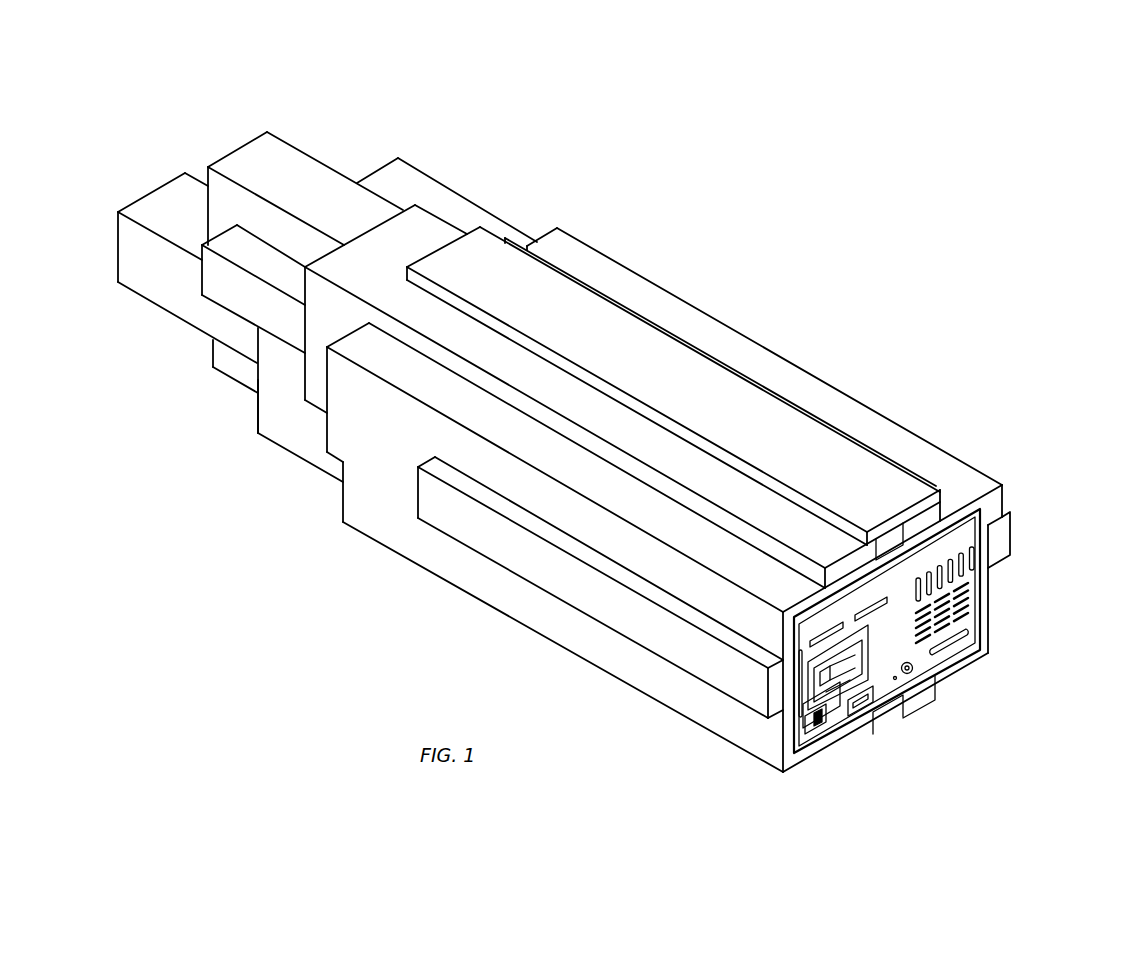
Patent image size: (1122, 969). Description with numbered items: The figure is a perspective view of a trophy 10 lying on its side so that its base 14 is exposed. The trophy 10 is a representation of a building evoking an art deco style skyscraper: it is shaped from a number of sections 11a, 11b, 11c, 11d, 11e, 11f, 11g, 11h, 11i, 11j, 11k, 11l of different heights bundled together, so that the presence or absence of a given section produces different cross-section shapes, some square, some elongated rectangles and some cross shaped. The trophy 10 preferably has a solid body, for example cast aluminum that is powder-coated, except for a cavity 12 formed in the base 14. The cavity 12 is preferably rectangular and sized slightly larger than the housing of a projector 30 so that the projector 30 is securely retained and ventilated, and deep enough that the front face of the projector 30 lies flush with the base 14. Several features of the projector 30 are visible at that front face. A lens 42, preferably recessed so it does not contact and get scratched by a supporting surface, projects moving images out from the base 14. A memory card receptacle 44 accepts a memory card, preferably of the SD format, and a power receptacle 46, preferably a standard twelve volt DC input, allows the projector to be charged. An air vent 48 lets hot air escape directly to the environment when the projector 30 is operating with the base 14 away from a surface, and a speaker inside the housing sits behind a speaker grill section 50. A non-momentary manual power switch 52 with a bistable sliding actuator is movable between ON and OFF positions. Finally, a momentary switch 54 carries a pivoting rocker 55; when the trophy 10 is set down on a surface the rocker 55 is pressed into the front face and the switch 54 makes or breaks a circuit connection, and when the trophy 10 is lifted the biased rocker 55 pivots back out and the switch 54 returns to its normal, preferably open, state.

The trophy 10 is at (745, 342).
The section 11a is at (627, 330).
The section 11b is at (568, 255).
The section 11c is at (420, 183).
The section 11d is at (250, 163).
The section 11e is at (158, 200).
The section 11f is at (207, 280).
The section 11g is at (215, 353).
The section 11h is at (267, 420).
The section 11i is at (260, 423).
The section 11j is at (333, 427).
The section 11k is at (367, 525).
The section 11l is at (480, 545).
The cavity 12 is at (1000, 500).
The base 14 is at (1002, 557).
The projector 30 is at (970, 535).
The lens 42 is at (818, 676).
The memory card receptacle 44 is at (963, 642).
The power receptacle 46 is at (908, 675).
The air vent 48 is at (973, 550).
The speaker grill section 50 is at (970, 610).
The non-momentary manual power switch 52 is at (806, 750).
The momentary switch 54 is at (850, 713).
The rocker 55 is at (862, 707).